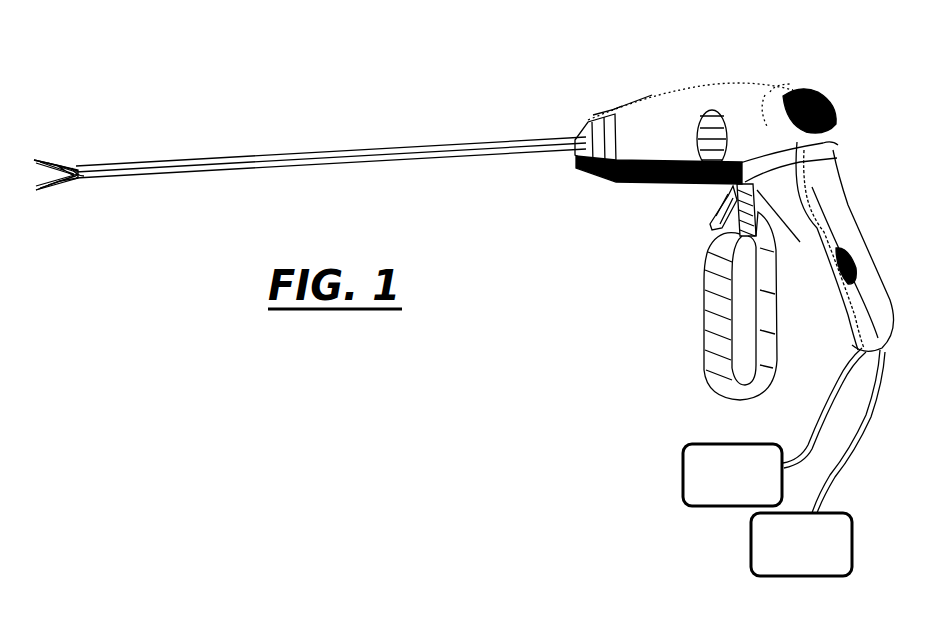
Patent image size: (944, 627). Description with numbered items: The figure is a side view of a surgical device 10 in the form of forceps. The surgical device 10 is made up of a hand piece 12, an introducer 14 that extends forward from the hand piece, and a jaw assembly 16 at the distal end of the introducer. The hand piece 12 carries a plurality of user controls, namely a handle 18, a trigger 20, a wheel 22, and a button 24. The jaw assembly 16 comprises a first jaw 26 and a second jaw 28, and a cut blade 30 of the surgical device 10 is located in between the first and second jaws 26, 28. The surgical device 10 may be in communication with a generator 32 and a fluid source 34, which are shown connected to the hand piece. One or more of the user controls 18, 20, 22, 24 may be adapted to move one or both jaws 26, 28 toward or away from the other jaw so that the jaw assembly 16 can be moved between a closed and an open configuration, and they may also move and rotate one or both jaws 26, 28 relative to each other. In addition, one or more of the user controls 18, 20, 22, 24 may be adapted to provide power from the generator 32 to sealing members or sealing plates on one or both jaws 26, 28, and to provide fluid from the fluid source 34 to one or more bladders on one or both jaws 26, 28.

The surgical device 10 is at (338, 72).
The hand piece 12 is at (660, 62).
The introducer 14 is at (397, 148).
The jaw assembly 16 is at (68, 135).
The handle 18 is at (707, 317).
The trigger 20 is at (727, 200).
The wheel 22 is at (713, 110).
The button 24 is at (820, 103).
The first jaw 26 is at (42, 148).
The second jaw 28 is at (52, 192).
The cut blade 30 is at (76, 170).
The generator 32 is at (742, 485).
The fluid source 34 is at (810, 553).